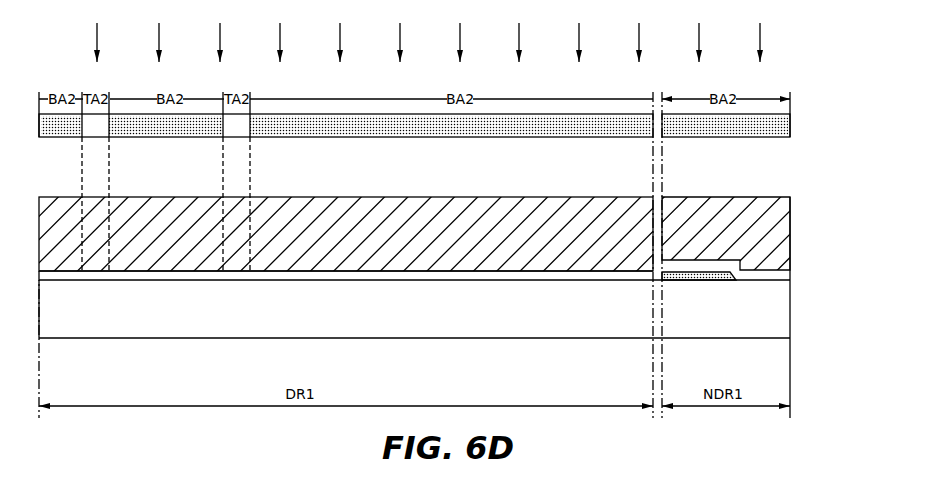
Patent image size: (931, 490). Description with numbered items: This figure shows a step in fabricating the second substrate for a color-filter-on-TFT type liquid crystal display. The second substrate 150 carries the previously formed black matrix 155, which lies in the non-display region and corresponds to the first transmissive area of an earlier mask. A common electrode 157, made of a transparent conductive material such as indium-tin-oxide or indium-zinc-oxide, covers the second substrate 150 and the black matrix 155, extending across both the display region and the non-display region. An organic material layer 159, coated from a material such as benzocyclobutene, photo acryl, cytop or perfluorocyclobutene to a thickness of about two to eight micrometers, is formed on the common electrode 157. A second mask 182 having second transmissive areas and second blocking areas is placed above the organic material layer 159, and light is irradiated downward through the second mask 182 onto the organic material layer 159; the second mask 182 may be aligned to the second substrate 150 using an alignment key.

The second mask 182 is at (792, 125).
The organic material layer 159 is at (577, 199).
The common electrode 157 is at (492, 276).
The black matrix 155 is at (680, 283).
The second substrate 150 is at (324, 320).